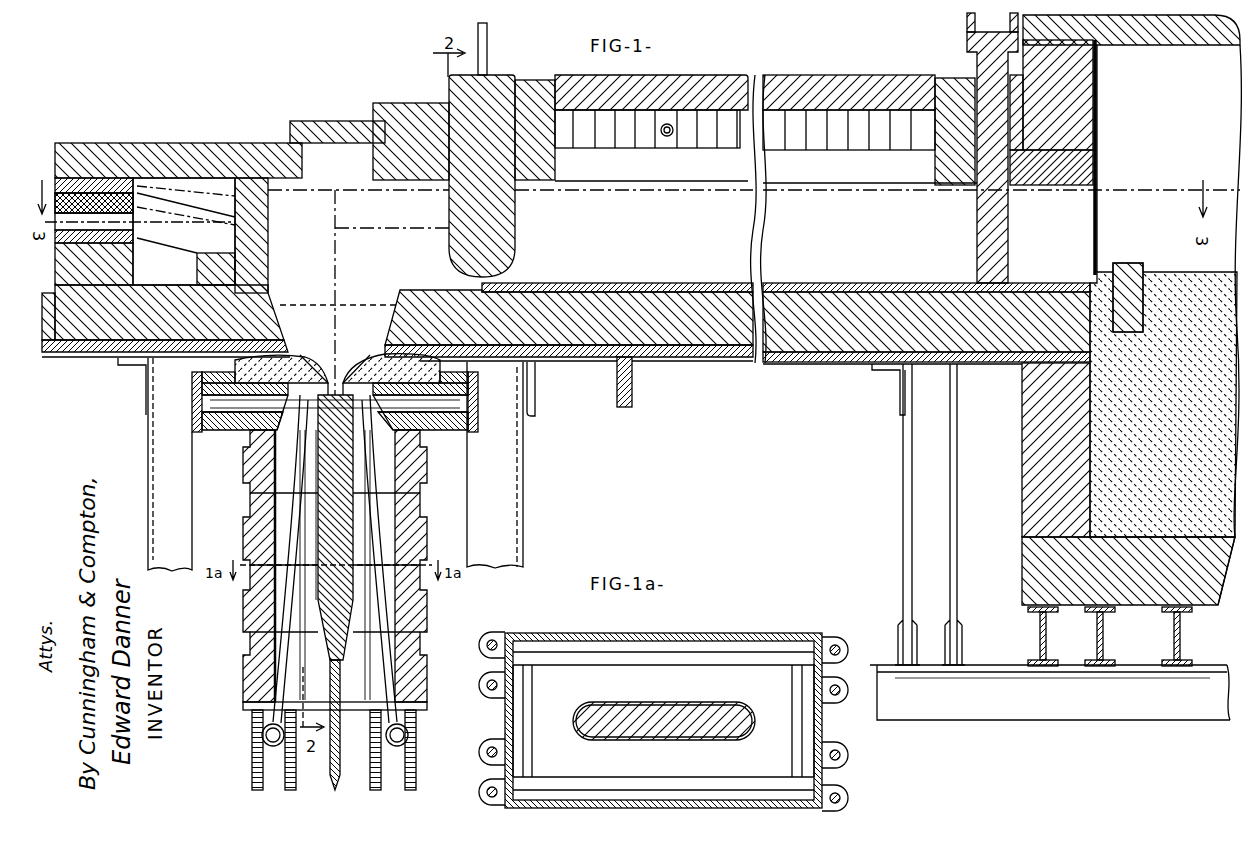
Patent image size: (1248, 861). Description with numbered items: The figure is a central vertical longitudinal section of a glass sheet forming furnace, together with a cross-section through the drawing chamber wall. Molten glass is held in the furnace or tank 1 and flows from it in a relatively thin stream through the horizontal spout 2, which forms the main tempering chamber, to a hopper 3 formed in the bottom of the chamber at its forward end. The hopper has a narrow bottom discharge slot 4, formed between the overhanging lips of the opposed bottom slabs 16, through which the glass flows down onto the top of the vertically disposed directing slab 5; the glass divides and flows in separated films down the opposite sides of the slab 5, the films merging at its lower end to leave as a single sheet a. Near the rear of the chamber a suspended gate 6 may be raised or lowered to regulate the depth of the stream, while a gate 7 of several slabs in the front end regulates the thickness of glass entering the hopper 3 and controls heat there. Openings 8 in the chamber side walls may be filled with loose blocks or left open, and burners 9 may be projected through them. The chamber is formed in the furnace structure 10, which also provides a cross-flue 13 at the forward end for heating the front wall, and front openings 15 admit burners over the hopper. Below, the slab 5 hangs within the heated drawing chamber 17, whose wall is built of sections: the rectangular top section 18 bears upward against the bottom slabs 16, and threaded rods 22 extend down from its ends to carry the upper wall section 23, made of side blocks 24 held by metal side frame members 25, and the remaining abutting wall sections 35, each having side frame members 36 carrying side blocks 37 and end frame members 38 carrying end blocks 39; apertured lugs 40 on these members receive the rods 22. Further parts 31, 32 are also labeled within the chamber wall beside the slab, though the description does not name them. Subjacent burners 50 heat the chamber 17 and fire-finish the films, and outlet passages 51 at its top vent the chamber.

In FIG. 1, the furnace or tank 1 is at (1131, 310).
In FIG. 1, the horizontal spout 2 is at (699, 237).
In FIG. 1, the hopper 3 is at (754, 292).
In FIG. 1, the discharge slot 4 is at (338, 362).
In FIG. 1, the directing slab 5 is at (345, 522).
In FIG. 1A, the directing slab 5 is at (668, 730).
In FIG. 1, the gate 6 is at (977, 235).
In FIG. 1, the gate 7 is at (497, 222).
In FIG. 1, the openings 8 is at (836, 100).
In FIG. 1, the burners 9 is at (666, 137).
In FIG. 1, the furnace structure 10 is at (830, 348).
In FIG. 1, the cross-flue 13 is at (140, 231).
In FIG. 1, the front openings 15 is at (167, 240).
In FIG. 1, the bottom slabs 16 is at (368, 365).
In FIG. 1, the drawing chamber 17 is at (380, 542).
In FIG. 1A, the drawing chamber 17 is at (681, 688).
In FIG. 1, the top section 18 is at (470, 425).
In FIG. 1, the threaded rods 22 is at (417, 776).
In FIG. 1A, the threaded rods 22 is at (482, 690).
In FIG. 1, the upper wall section 23 is at (427, 463).
In FIG. 1, the side blocks 24 is at (427, 447).
In FIG. 1, the side frame member 25 is at (427, 480).
In FIG. 1, the liner 31 is at (286, 462).
In FIG. 1, the sleeve 32 is at (372, 478).
In FIG. 1, the wall sections 35 is at (427, 612).
In FIG. 1, the side frame members 36 is at (427, 672).
In FIG. 1A, the side frame members 36 is at (670, 634).
In FIG. 1, the side blocks 37 is at (423, 655).
In FIG. 1A, the side blocks 37 is at (720, 660).
In FIG. 1A, the end frame member 38 is at (505, 718).
In FIG. 1A, the end blocks 39 is at (528, 745).
In FIG. 1A, the apertured lugs 40 is at (480, 796).
In FIG. 1, the burners 50 is at (397, 747).
In FIG. 1, the outlet passages 51 is at (462, 407).
In FIG. 1, the sheet a is at (340, 741).